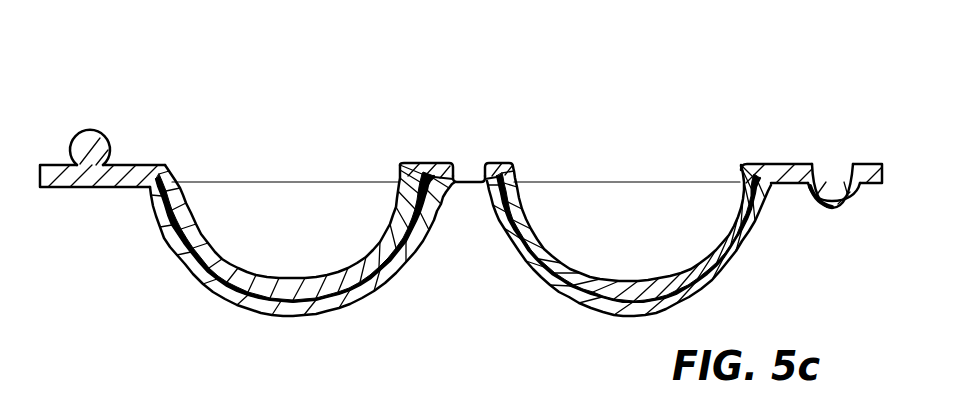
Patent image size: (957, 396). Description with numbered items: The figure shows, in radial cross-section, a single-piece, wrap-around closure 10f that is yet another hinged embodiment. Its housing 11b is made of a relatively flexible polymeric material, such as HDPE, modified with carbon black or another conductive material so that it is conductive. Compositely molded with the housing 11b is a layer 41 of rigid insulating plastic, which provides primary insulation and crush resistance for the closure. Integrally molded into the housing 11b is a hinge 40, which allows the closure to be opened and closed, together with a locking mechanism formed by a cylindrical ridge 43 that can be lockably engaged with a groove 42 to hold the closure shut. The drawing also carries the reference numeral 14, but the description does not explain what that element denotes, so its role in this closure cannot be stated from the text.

The single-piece wrap-around closure 10f is at (138, 77).
The tray wall 14 is at (595, 181).
The cylindrical ridge 43 is at (98, 134).
The layer of rigid insulating plastic 41 is at (188, 165).
The hinge 40 is at (460, 180).
The groove 42 is at (826, 160).
The housing 11b is at (240, 297).